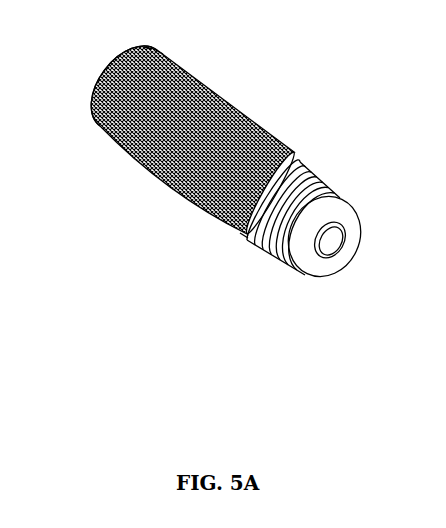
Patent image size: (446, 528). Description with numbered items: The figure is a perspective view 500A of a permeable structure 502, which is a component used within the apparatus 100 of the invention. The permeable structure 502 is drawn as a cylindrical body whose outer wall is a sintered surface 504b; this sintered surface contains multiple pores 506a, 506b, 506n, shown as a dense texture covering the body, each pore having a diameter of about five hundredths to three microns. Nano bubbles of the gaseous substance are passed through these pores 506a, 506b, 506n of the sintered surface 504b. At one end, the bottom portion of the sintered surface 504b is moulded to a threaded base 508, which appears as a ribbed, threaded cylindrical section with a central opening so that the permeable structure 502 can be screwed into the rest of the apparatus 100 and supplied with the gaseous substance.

The device body / housing 100 is at (209, 157).
The perspective view 500A is at (209, 195).
The permeable structure 502 is at (168, 188).
The sintered surface 504b is at (93, 125).
The pore 506a is at (150, 50).
The pore 506b is at (153, 50).
The pore 506n is at (237, 234).
The threaded base 508 is at (333, 184).